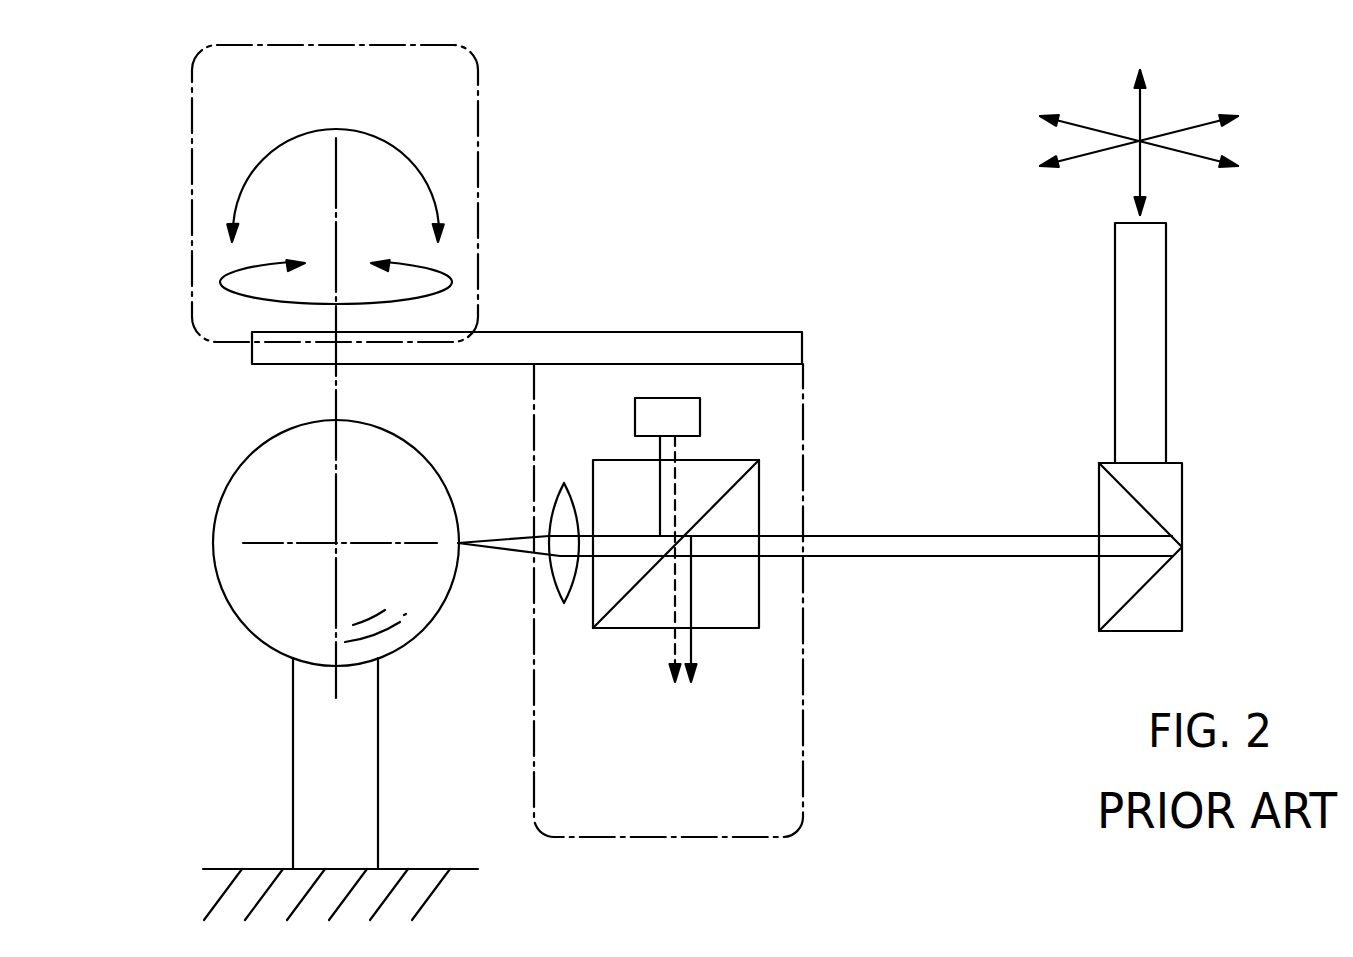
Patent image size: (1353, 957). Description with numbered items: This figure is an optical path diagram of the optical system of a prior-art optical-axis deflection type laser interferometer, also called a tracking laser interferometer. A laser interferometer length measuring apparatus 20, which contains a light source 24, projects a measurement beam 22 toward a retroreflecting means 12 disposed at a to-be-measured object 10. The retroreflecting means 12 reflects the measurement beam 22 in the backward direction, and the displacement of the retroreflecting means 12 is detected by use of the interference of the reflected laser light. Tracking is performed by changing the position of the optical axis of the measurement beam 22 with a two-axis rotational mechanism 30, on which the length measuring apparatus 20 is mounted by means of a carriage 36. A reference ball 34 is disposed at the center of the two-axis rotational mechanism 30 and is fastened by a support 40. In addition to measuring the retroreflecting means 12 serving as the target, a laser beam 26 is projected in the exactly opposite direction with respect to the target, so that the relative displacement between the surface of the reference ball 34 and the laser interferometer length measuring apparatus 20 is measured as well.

The to-be-measured object 10 is at (1158, 316).
The retroreflecting means 12 is at (1183, 610).
The laser interferometer length measuring apparatus 20 is at (680, 838).
The measurement beam 22 is at (942, 560).
The light source 24 is at (700, 426).
The laser beam 26 is at (517, 557).
The two-axis rotational mechanism 30 is at (363, 45).
The reference ball 34 is at (236, 600).
The carriage 36 is at (574, 335).
The support 40 is at (293, 768).